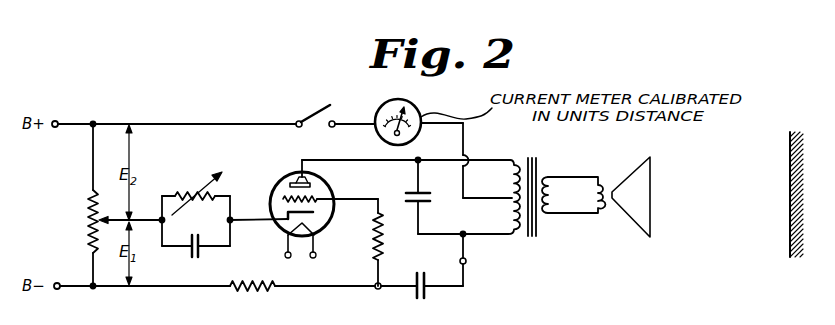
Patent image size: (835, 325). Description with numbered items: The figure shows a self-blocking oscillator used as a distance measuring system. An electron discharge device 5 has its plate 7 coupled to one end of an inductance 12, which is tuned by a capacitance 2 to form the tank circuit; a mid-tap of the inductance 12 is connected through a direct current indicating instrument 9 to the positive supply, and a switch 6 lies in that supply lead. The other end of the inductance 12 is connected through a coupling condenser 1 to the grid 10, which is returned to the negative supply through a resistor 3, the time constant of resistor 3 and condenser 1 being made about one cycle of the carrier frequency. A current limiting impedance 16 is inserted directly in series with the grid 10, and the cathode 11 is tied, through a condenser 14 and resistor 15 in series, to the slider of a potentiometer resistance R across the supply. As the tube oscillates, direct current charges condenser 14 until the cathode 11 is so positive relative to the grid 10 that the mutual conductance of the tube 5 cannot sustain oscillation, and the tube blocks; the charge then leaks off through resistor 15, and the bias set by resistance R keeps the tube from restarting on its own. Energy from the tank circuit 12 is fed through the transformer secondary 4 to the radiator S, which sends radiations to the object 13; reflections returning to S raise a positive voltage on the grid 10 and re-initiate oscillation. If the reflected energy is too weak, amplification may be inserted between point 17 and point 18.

The coupling condenser 1 is at (425, 300).
The capacitance 2 is at (428, 205).
The resistor 3 is at (259, 277).
The transformer secondary winding 4 is at (540, 175).
The electron discharge device 5 is at (271, 191).
The switch 6 is at (310, 109).
The plate 7 is at (300, 171).
The direct current indicating instrument 9 is at (381, 137).
The grid 10 is at (283, 199).
The cathode 11 is at (315, 212).
The inductance 12 is at (493, 176).
The object 13 is at (790, 247).
The condenser 14 is at (193, 258).
The resistor 15 is at (198, 189).
The current limiting impedance 16 is at (374, 242).
The point 17 is at (467, 262).
The point 18 is at (375, 290).
The potentiometer resistance R is at (88, 230).
The energy radiating means S is at (627, 174).